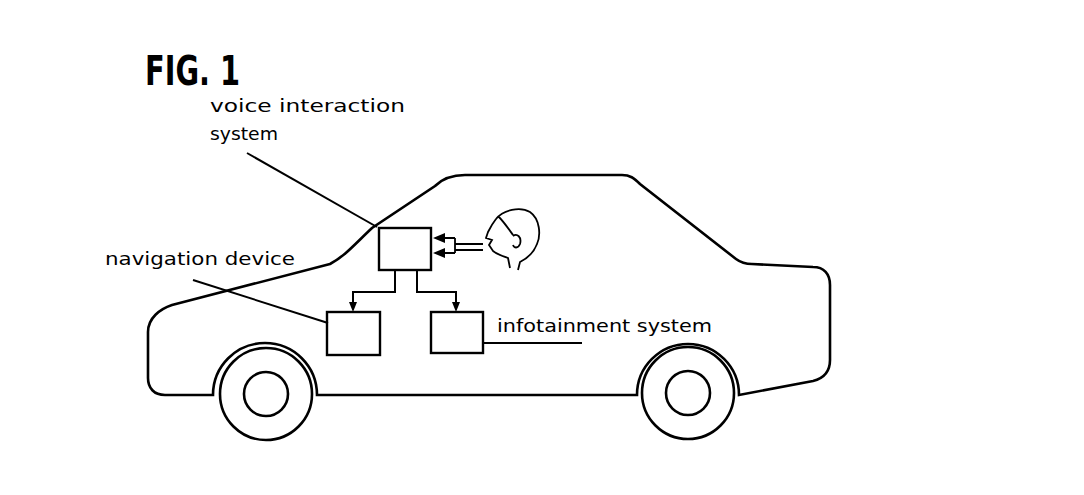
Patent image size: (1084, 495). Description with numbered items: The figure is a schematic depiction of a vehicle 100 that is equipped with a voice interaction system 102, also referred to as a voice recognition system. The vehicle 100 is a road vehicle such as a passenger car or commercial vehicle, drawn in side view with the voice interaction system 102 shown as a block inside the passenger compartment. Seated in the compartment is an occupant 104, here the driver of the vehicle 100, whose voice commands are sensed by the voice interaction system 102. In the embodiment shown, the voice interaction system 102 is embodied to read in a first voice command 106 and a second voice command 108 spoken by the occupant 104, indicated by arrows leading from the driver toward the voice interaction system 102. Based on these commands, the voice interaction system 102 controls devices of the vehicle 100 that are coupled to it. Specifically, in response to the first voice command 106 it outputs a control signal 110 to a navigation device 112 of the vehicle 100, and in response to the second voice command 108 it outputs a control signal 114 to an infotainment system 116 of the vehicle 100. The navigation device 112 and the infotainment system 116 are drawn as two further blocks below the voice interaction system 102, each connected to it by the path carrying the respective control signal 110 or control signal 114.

The vehicle 100 is at (693, 215).
The voice interaction system 102 is at (398, 227).
The occupant 104 is at (517, 210).
The first voice command 106 is at (474, 245).
The second voice command 108 is at (475, 248).
The control signal 110 is at (367, 290).
The navigation device 112 is at (345, 355).
The control signal 114 is at (423, 293).
The infotainment system 116 is at (472, 353).